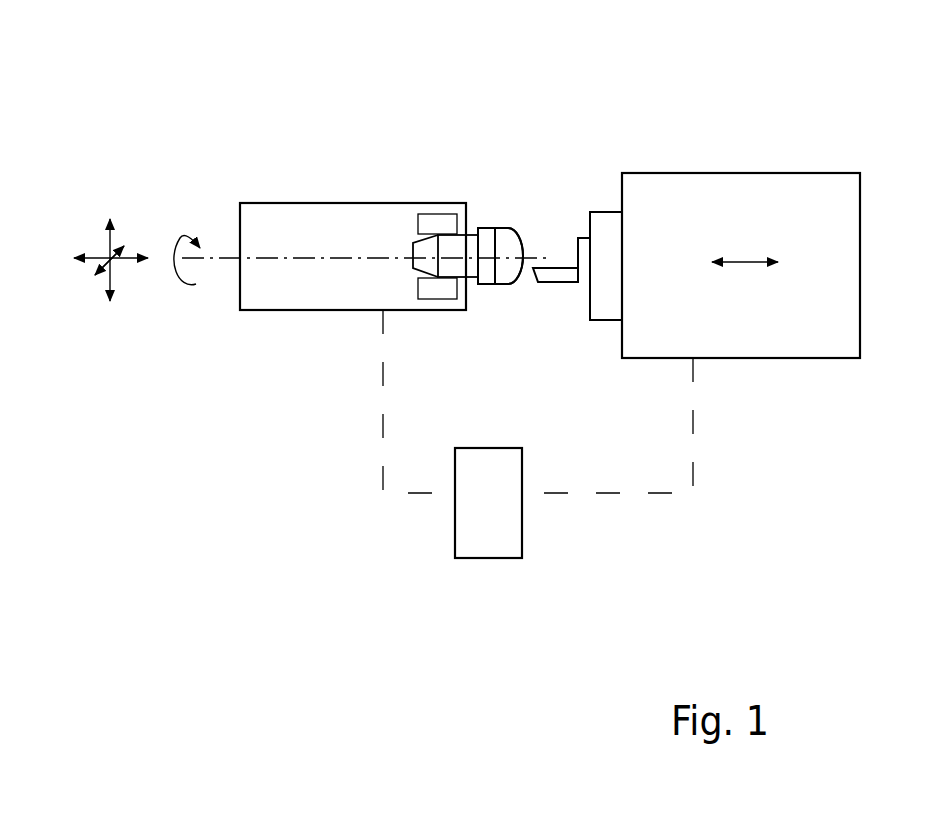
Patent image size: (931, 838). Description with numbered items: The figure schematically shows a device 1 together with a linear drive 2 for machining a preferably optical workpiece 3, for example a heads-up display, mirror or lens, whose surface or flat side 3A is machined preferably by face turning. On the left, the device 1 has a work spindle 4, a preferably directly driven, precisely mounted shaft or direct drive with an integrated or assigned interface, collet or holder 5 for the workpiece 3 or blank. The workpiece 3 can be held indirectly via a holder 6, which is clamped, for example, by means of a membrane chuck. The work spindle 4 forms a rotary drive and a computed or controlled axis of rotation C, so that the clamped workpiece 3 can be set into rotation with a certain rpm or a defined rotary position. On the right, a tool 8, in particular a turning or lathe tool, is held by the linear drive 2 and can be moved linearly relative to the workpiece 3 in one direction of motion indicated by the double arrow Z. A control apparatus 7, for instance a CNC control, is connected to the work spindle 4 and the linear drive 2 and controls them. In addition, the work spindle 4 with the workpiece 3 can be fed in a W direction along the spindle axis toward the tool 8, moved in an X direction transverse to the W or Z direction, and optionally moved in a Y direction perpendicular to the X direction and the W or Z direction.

The device 1 is at (294, 100).
The linear drive 2 is at (675, 165).
The workpiece 3 is at (505, 243).
The surface or flat side 3A is at (524, 230).
The work spindle 4 is at (274, 203).
The interface or collet or holder 5 is at (428, 223).
The holder 6 is at (468, 240).
The control apparatus 7 is at (495, 545).
The tool 8 is at (558, 268).
The W direction W is at (128, 257).
The axis of rotation C is at (185, 233).
The X direction X is at (112, 272).
The Y direction Y is at (110, 270).
The double arrow Z is at (746, 262).